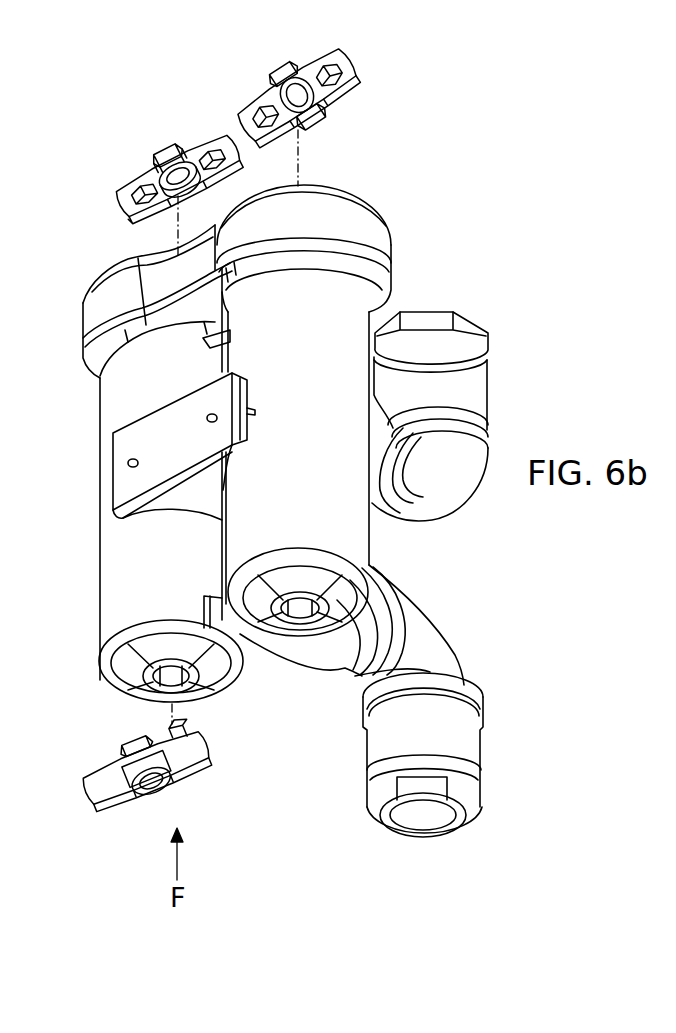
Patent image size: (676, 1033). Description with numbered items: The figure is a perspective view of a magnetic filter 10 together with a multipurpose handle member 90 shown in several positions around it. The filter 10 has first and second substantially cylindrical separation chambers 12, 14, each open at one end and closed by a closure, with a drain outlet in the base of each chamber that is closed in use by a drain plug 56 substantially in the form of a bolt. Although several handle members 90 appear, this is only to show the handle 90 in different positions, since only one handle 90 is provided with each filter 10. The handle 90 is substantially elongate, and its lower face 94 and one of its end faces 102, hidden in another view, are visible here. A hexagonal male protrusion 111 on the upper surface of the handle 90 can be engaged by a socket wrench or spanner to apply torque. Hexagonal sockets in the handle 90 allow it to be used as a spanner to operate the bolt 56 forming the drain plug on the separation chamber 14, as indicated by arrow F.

The magnetic filter 10 is at (116, 413).
The first separation chamber 12 is at (355, 530).
The second separation chamber 14 is at (120, 568).
The drain plug 56 is at (195, 695).
The handle member 90 is at (190, 150).
The lower face 94 is at (135, 170).
The end face 102 is at (216, 138).
The hexagonal male protrusion 111 is at (140, 793).